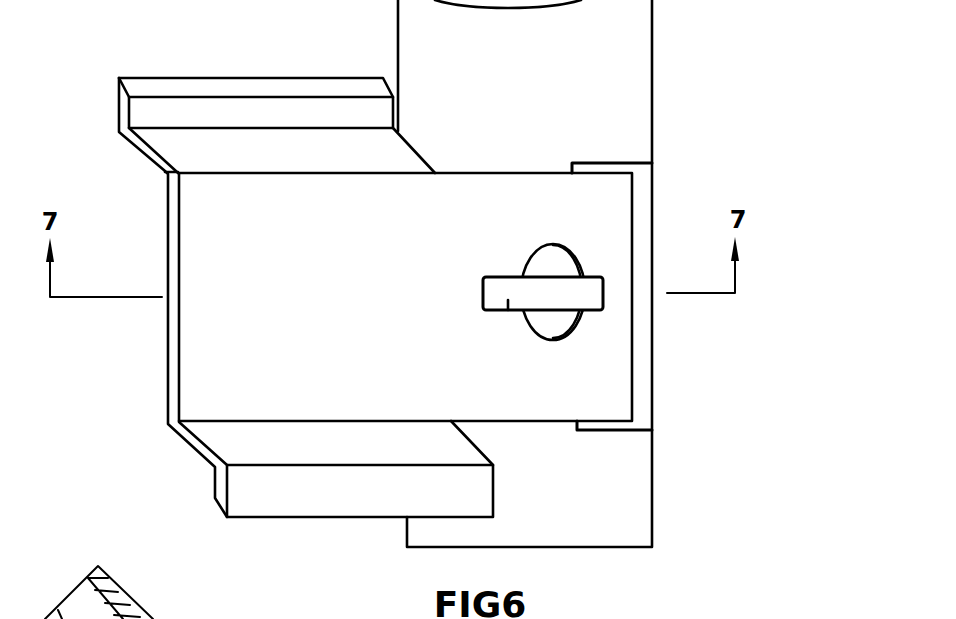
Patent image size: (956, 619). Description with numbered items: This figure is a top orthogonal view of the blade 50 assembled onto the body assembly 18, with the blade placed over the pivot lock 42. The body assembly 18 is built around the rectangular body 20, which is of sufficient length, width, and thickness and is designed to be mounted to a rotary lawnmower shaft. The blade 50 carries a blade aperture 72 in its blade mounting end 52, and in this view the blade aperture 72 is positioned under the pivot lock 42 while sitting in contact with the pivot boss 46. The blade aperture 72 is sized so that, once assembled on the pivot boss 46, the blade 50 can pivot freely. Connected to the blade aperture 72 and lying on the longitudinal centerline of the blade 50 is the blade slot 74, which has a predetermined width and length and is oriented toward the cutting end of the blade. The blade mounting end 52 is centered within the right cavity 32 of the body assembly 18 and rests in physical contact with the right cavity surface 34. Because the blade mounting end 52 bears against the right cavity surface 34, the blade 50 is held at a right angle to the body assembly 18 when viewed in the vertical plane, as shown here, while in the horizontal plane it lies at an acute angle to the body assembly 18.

The body assembly 18 is at (658, 108).
The body 20 is at (427, 25).
The right cavity 32 is at (653, 180).
The right cavity surface 34 is at (643, 400).
The pivot lock 42 is at (573, 293).
The pivot boss 46 is at (552, 318).
The blade 50 is at (180, 347).
The blade mounting end 52 is at (572, 397).
The blade aperture 72 is at (528, 263).
The blade slot 74 is at (508, 310).